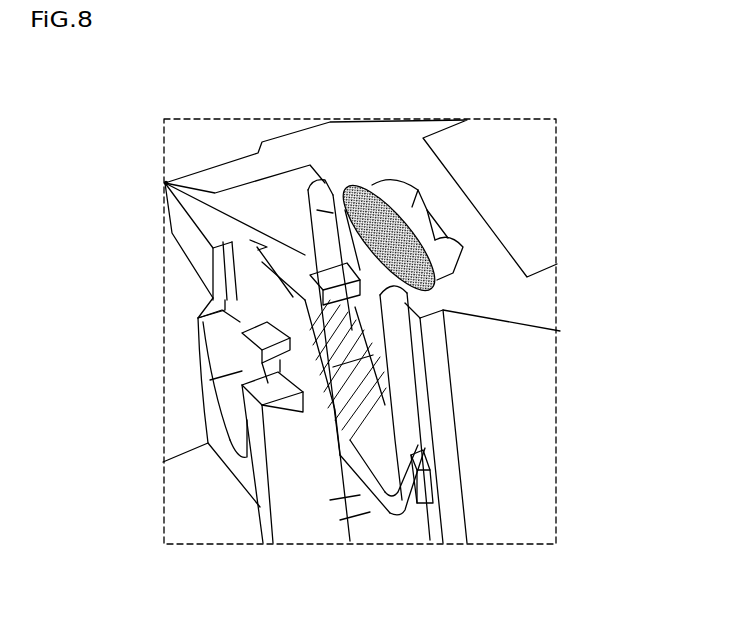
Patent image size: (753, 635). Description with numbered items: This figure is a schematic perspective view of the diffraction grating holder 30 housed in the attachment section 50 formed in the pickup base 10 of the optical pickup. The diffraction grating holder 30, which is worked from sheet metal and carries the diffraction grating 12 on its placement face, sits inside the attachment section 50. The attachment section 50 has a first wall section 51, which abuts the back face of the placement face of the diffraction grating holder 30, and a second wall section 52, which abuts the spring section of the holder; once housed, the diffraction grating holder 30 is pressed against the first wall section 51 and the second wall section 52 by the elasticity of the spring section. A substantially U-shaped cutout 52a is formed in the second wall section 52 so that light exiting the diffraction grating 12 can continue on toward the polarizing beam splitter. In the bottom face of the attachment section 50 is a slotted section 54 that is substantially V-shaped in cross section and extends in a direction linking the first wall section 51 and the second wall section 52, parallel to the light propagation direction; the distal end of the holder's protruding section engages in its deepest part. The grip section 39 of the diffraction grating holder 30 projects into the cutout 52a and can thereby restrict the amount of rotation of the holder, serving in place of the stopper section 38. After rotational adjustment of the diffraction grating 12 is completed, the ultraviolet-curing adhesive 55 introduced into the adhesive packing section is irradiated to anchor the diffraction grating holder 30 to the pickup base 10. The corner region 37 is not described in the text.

The pickup base 10 is at (543, 298).
The diffraction grating 12 is at (370, 435).
The diffraction grating holder 30 is at (435, 527).
The corner portion 37 is at (146, 179).
The stopper section 38 is at (427, 488).
The grip section 39 is at (186, 324).
The attachment section 50 is at (326, 255).
The first wall section 51 is at (412, 357).
The second wall section 52 is at (236, 252).
The cutout 52a is at (163, 339).
The slotted section 54 is at (355, 555).
The ultraviolet-curing adhesive 55 is at (387, 232).